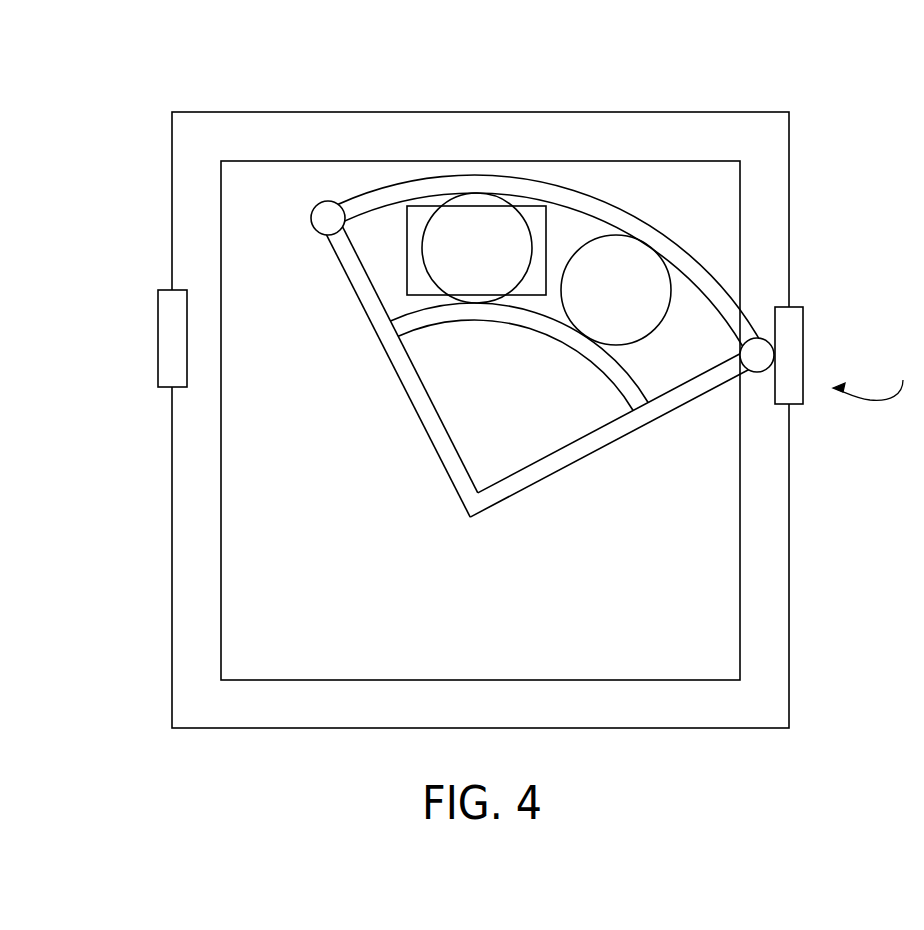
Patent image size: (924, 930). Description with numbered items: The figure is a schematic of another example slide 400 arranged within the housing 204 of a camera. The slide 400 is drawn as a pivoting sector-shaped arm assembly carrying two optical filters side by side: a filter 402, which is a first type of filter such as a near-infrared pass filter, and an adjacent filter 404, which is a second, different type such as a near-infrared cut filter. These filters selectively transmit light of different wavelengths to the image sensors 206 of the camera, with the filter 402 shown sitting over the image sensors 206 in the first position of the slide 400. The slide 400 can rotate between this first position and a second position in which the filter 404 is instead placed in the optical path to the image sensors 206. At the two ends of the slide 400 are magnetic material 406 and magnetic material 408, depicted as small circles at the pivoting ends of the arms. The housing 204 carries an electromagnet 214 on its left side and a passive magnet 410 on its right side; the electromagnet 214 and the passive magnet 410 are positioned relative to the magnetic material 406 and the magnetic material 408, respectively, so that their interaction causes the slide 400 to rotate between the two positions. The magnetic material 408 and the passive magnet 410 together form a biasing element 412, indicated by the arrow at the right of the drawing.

The housing 204 is at (232, 112).
The image sensors 206 is at (530, 217).
The electromagnet 214 is at (158, 327).
The slide 400 is at (605, 213).
The filter 402 is at (475, 213).
The filter 404 is at (632, 270).
The magnetic material 406 is at (327, 215).
The magnetic material 408 is at (758, 360).
The passive magnet 410 is at (793, 333).
The biasing element 412 is at (878, 375).